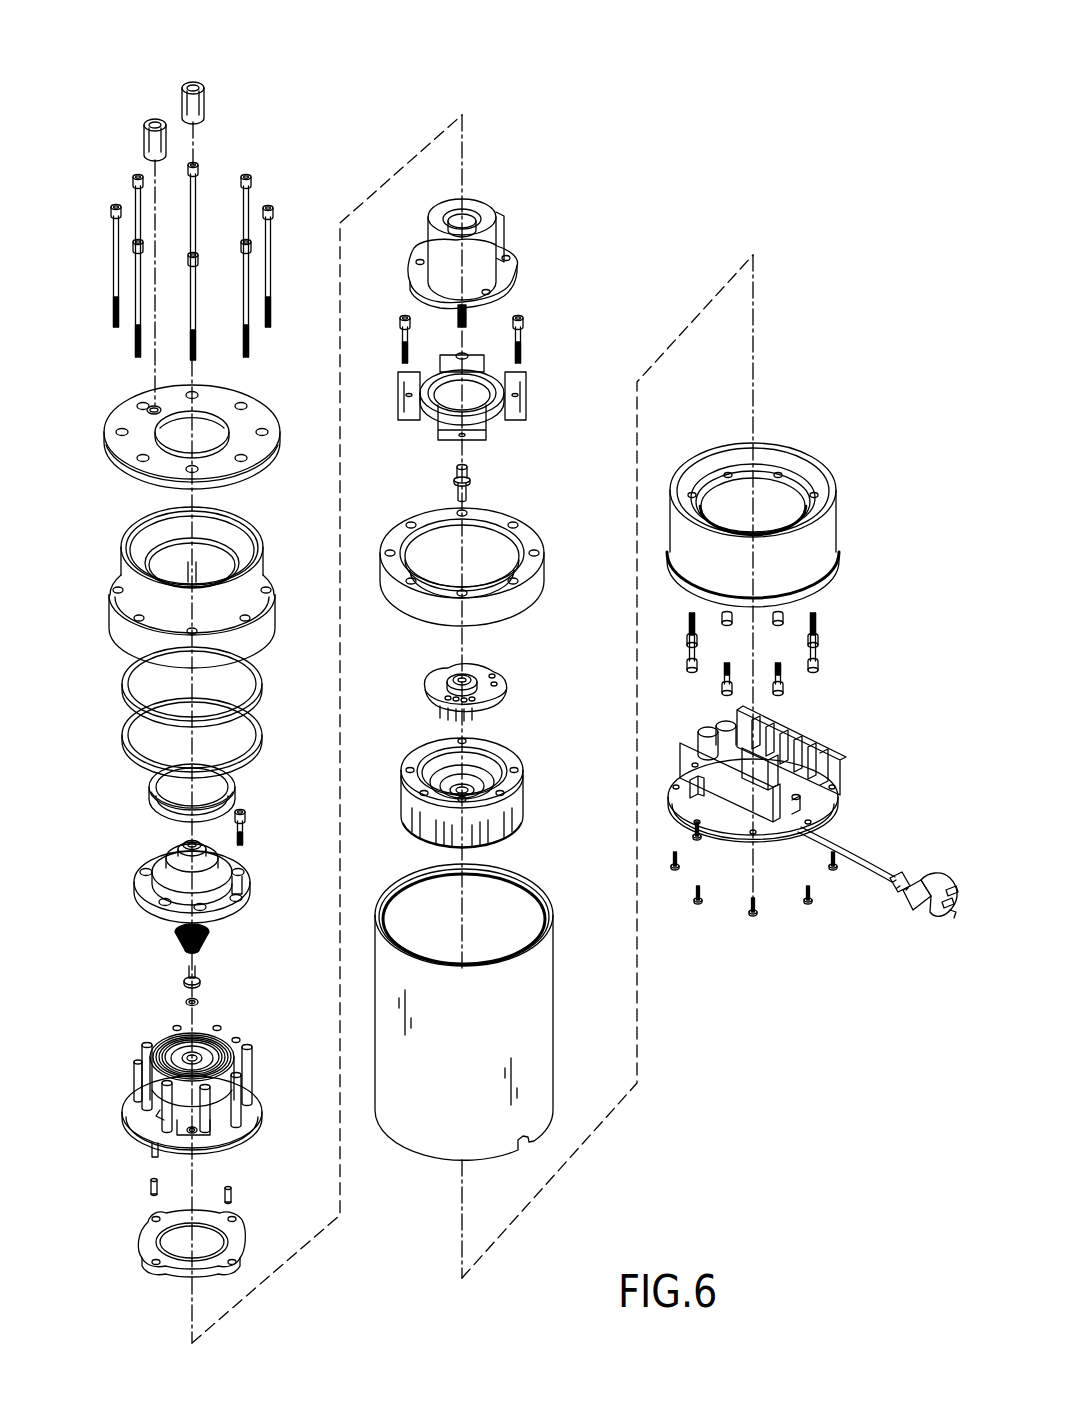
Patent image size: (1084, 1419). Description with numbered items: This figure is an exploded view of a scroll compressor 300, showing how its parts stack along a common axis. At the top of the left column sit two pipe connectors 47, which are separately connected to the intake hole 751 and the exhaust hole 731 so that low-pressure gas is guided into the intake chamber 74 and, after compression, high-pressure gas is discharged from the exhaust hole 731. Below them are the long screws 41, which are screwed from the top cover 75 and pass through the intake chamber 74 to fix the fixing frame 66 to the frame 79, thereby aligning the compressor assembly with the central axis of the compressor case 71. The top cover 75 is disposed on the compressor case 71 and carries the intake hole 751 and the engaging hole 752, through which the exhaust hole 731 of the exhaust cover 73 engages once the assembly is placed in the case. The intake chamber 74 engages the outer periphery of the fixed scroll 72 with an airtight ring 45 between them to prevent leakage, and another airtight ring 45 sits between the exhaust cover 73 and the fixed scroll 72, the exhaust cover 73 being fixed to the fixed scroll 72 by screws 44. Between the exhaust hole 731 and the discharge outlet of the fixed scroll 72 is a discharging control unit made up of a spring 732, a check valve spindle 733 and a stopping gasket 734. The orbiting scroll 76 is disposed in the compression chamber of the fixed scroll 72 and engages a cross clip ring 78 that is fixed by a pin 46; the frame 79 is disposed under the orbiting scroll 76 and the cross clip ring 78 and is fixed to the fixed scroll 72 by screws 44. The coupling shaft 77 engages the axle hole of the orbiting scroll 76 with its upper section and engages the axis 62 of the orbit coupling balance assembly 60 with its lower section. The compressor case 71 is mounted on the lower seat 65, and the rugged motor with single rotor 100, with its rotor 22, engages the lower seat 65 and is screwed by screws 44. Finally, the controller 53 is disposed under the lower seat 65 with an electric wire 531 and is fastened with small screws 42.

The scroll compressor 300 is at (92, 15).
The pipe connectors 47 is at (163, 143).
The screws 41 is at (116, 248).
The top cover 75 is at (181, 429).
The intake hole 751 is at (147, 412).
The engaging hole 752 is at (215, 434).
The intake chamber 74 is at (124, 576).
The airtight ring 45 is at (124, 738).
The screws 44 is at (246, 828).
The exhaust cover 73 is at (164, 866).
The exhaust hole 731 is at (185, 845).
The spring 732 is at (176, 936).
The check valve spindle 733 is at (186, 972).
The stopping gasket 734 is at (185, 1002).
The fixed scroll 72 is at (150, 1086).
The pin 46 is at (150, 1188).
The cross clip ring 78 is at (150, 1238).
The orbiting scroll 76 is at (436, 240).
The frame 79 is at (522, 394).
The coupling shaft 77 is at (456, 482).
The fixing frame 66 is at (512, 545).
The orbit coupling balance assembly 60 is at (504, 671).
The axis 62 is at (482, 681).
The rugged motor with single rotor 100 is at (502, 781).
The rotor 22 is at (522, 762).
The compressor case 71 is at (542, 1018).
The lower seat 65 is at (792, 470).
The controller 53 is at (832, 756).
The electric wire 531 is at (854, 860).
The small screws 42 is at (696, 904).